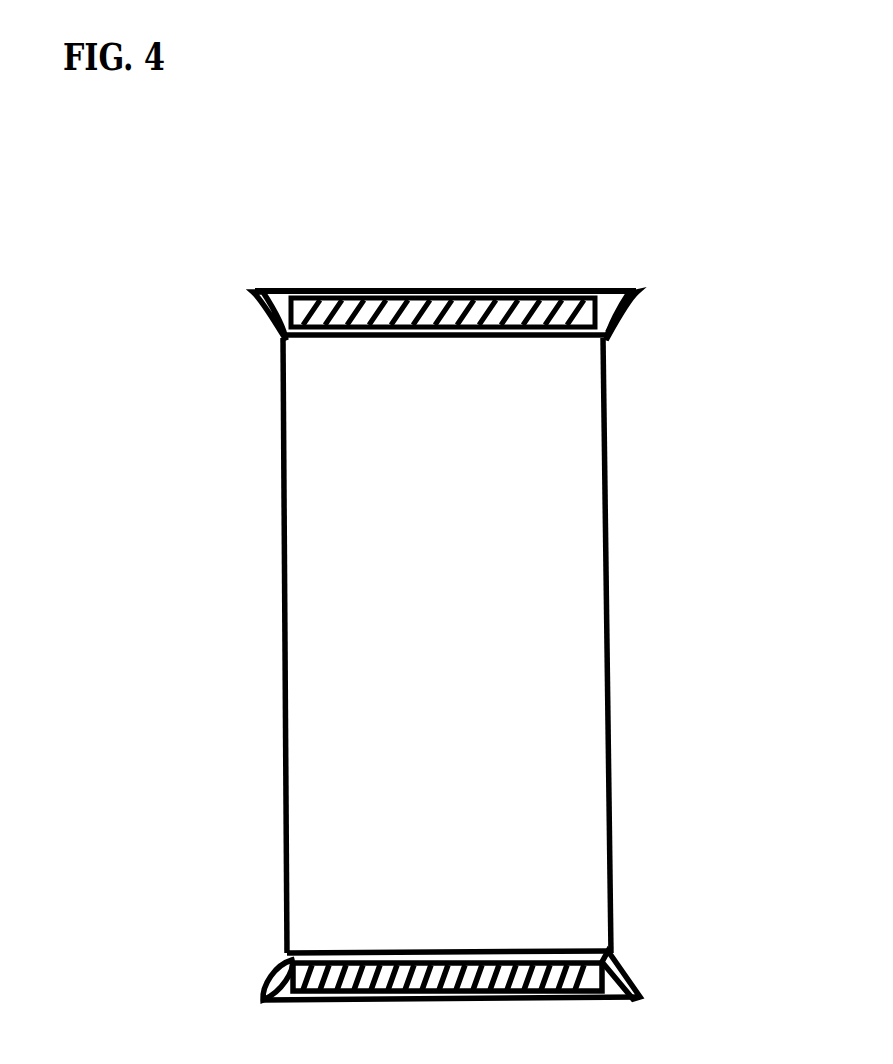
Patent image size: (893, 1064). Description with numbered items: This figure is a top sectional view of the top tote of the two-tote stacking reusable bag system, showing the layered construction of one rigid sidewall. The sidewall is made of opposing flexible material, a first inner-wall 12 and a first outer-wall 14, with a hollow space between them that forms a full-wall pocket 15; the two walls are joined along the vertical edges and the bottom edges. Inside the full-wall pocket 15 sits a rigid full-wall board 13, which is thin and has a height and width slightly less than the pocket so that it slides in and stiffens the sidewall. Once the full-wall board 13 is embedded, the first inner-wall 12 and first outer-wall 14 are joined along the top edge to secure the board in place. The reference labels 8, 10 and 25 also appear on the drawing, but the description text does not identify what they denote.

The pouch body 8 is at (623, 871).
The panel 10 is at (355, 461).
The first inner-wall 12 is at (362, 338).
The full-wall board 13 is at (395, 312).
The first outer-wall 14 is at (475, 286).
The full-wall pocket 15 is at (611, 318).
The package 25 is at (242, 198).